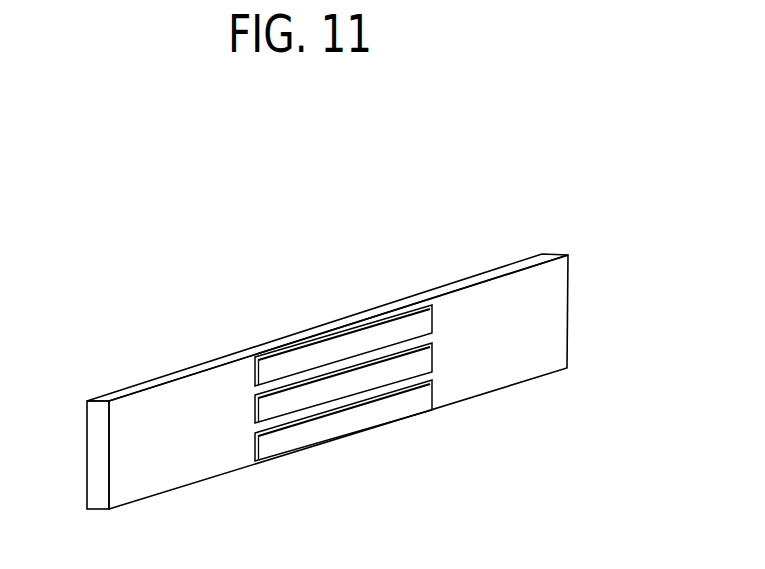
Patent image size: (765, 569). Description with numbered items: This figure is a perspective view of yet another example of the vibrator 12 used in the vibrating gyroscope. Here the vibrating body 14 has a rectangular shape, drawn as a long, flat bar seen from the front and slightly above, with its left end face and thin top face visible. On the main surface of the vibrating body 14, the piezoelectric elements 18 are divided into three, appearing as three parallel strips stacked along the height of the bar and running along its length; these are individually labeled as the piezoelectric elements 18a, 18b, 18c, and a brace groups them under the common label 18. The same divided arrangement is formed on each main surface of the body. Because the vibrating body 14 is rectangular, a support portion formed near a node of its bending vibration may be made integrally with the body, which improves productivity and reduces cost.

The vibrator 12 is at (317, 302).
The vibrating body 14 is at (327, 341).
The piezoelectric elements 18 is at (323, 318).
The piezoelectric element 18a is at (328, 307).
The piezoelectric element 18b is at (343, 325).
The piezoelectric element 18c is at (343, 344).